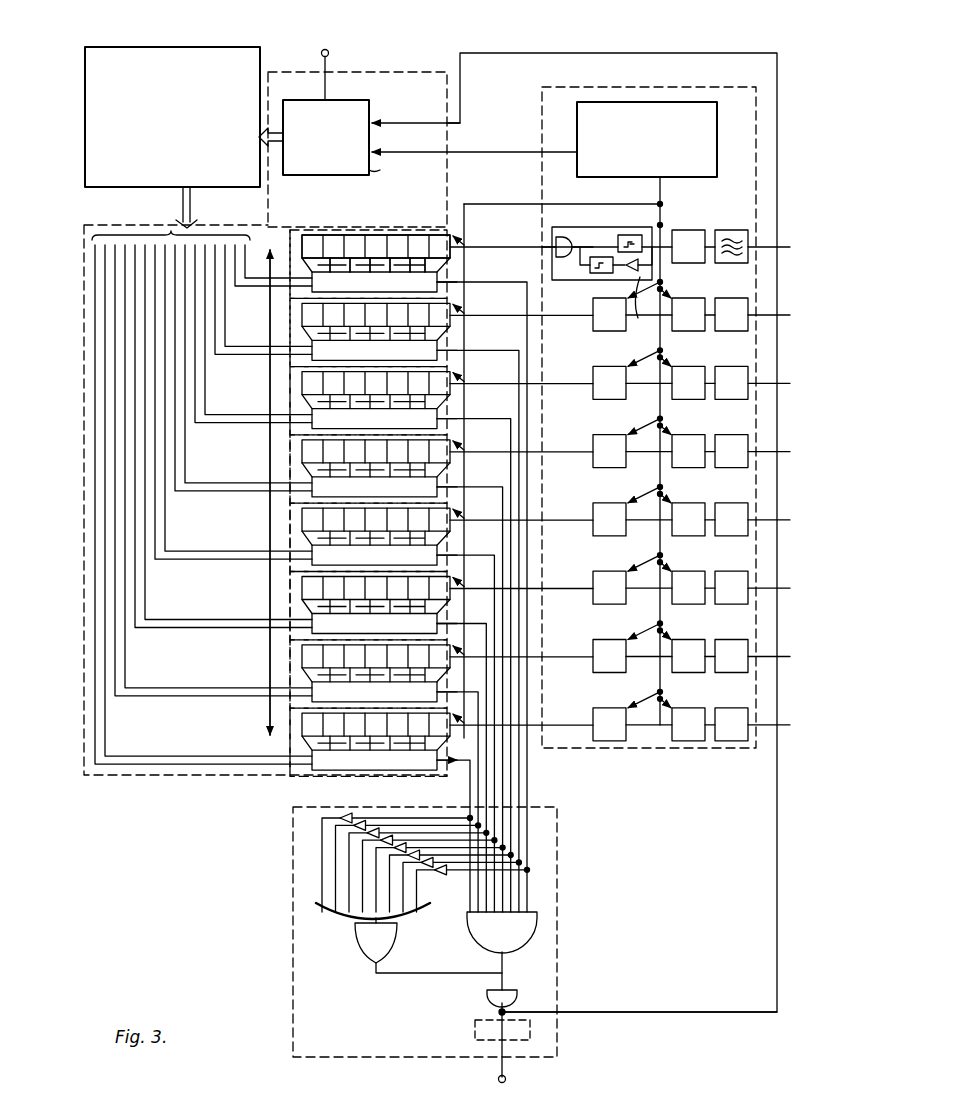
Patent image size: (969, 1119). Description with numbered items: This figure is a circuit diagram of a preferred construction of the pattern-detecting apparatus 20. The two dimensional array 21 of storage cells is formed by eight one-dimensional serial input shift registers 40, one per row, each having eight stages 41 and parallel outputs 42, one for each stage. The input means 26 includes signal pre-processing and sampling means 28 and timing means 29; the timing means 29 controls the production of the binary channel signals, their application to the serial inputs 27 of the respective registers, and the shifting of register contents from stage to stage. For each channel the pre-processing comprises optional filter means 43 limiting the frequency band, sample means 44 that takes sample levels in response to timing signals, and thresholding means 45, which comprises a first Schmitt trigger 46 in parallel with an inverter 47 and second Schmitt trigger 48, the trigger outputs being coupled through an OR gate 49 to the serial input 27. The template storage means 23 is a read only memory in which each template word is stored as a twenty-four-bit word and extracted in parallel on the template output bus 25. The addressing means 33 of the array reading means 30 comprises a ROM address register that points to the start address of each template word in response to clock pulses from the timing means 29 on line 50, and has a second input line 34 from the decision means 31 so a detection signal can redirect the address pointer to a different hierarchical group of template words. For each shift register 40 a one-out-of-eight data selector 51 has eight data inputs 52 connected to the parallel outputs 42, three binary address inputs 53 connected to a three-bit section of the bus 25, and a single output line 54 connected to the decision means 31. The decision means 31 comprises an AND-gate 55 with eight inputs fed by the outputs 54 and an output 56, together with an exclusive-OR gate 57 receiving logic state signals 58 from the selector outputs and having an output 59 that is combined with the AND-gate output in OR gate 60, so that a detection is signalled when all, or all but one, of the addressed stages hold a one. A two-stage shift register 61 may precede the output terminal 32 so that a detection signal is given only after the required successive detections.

The apparatus 20 is at (207, 830).
The two dimensional array 21 is at (476, 232).
The template storage means 23 is at (208, 46).
The template output bus 25 is at (180, 205).
The input means 26 is at (666, 434).
The serial inputs 27 is at (572, 259).
The signal pre-processing and sampling means 28 is at (684, 265).
The timing means 29 is at (717, 158).
The array reading means 30 is at (172, 778).
The decision means 31 is at (535, 950).
The output terminal 32 is at (508, 1075).
The addressing means 33 is at (387, 175).
The second input line 34 is at (412, 123).
The serial input shift register 40 is at (441, 486).
The stages 41 is at (366, 232).
The parallel outputs 42 is at (428, 268).
The filter means 43 is at (747, 235).
The sample means 44 is at (700, 232).
The thresholding means 45 is at (589, 227).
The first Schmitt trigger 46 is at (661, 226).
The inverter 47 is at (643, 309).
The second Schmitt trigger 48 is at (596, 276).
The OR gate 49 is at (560, 268).
The line 50 is at (424, 155).
The data selector 51 is at (300, 778).
The data inputs 52 is at (345, 760).
The binary address inputs 53 is at (300, 748).
The output line 54 is at (456, 765).
The AND-gate 55 is at (537, 930).
The output 56 is at (508, 972).
The exclusive-OR gate 57 is at (346, 922).
The logic state signals 58 is at (426, 873).
The output 59 is at (396, 973).
The OR gate 60 is at (487, 997).
The shift register 61 is at (475, 1030).